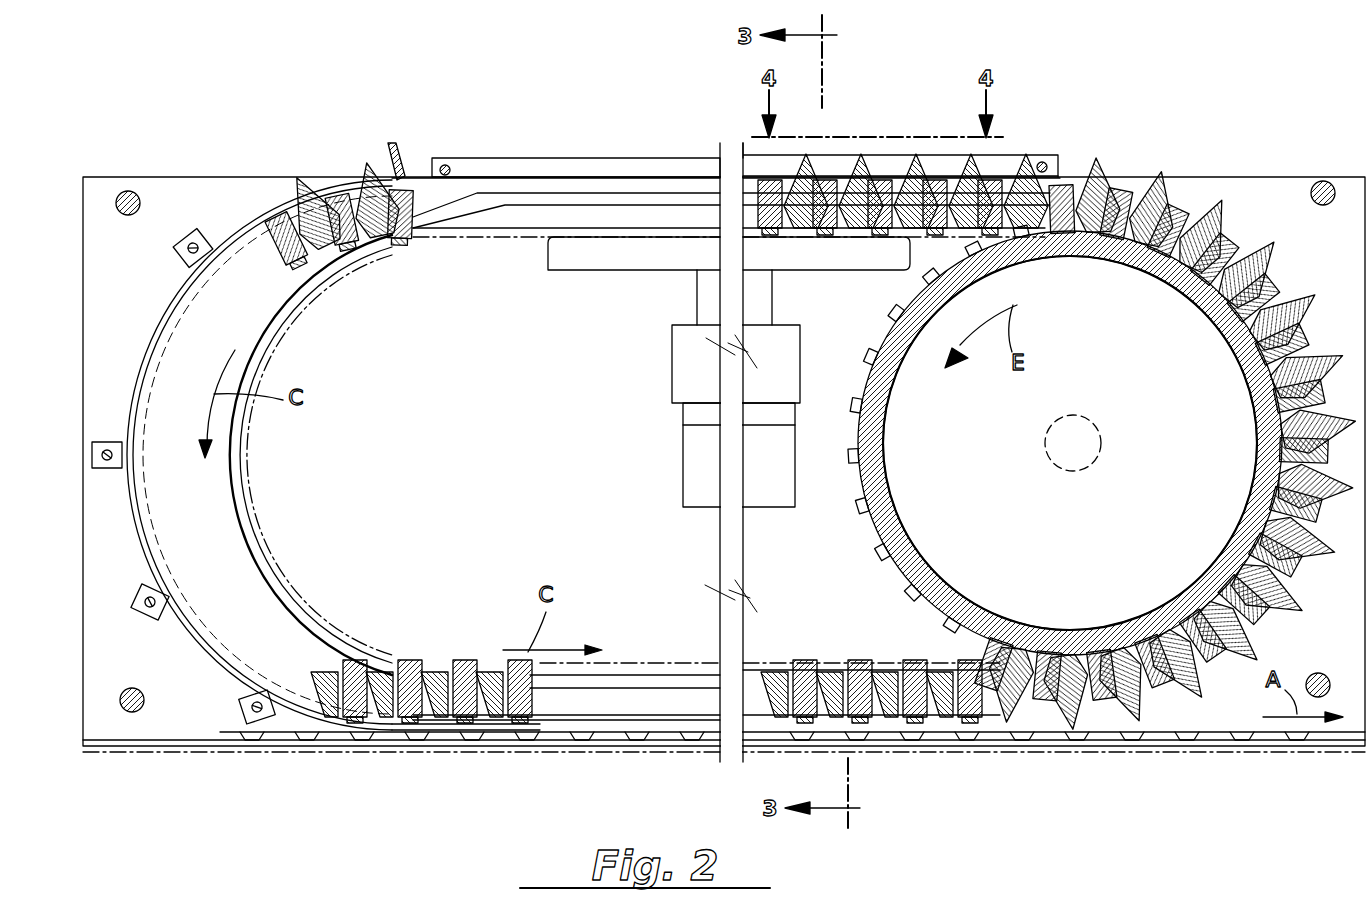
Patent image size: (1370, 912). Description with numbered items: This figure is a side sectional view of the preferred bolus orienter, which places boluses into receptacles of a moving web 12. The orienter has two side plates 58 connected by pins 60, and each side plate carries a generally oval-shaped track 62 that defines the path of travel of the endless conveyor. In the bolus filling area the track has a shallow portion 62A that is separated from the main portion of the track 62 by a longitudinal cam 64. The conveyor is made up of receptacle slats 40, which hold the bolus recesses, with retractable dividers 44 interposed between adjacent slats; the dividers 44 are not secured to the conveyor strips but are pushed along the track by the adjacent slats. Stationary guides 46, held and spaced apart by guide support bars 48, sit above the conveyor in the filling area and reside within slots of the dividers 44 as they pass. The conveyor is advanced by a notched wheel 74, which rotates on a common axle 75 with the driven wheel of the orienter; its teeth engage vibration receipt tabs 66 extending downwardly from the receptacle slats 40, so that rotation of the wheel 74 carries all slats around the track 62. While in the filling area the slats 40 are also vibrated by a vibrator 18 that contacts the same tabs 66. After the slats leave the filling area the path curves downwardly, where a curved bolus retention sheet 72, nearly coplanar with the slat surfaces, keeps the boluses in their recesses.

The web 12 is at (1252, 738).
The vibrator 18 is at (628, 262).
The receptacle slat 40 is at (980, 170).
The retractable divider 44 is at (852, 176).
The guide 46 is at (992, 165).
The guide support bar 48 is at (446, 166).
The side plate 58 is at (180, 176).
The pin 60 is at (128, 191).
The track 62 is at (571, 199).
The shallow portion 62A is at (619, 222).
The longitudinal cam 64 is at (528, 208).
The vibration receipt tab 66 is at (398, 240).
The curved bolus retention sheet 72 is at (256, 203).
The notched wheel 74 is at (945, 598).
The axle 75 is at (1100, 422).